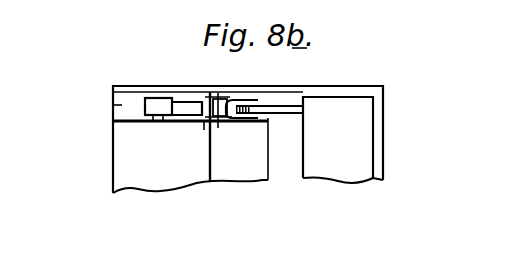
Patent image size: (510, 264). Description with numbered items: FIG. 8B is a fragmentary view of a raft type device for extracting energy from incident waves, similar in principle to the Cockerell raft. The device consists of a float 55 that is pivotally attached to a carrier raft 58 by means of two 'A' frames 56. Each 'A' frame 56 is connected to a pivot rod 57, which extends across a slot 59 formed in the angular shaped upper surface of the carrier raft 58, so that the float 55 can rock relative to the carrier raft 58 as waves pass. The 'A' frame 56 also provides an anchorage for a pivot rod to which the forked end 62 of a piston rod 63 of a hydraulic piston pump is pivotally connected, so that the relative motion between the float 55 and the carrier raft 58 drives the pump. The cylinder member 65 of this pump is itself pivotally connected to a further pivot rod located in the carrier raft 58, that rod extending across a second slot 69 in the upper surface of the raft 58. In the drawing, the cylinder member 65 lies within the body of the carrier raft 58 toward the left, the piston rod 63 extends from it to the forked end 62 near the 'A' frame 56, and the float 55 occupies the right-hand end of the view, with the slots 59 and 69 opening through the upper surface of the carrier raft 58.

The float 55 is at (355, 105).
The 'A' frame 56 is at (284, 107).
The pivot rod 57 is at (221, 100).
The carrier raft 58 is at (113, 162).
The slot 59 is at (222, 119).
The forked end 62 is at (257, 102).
The piston rod 63 is at (207, 111).
The cylinder member 65 is at (183, 108).
The slot 69 is at (113, 105).